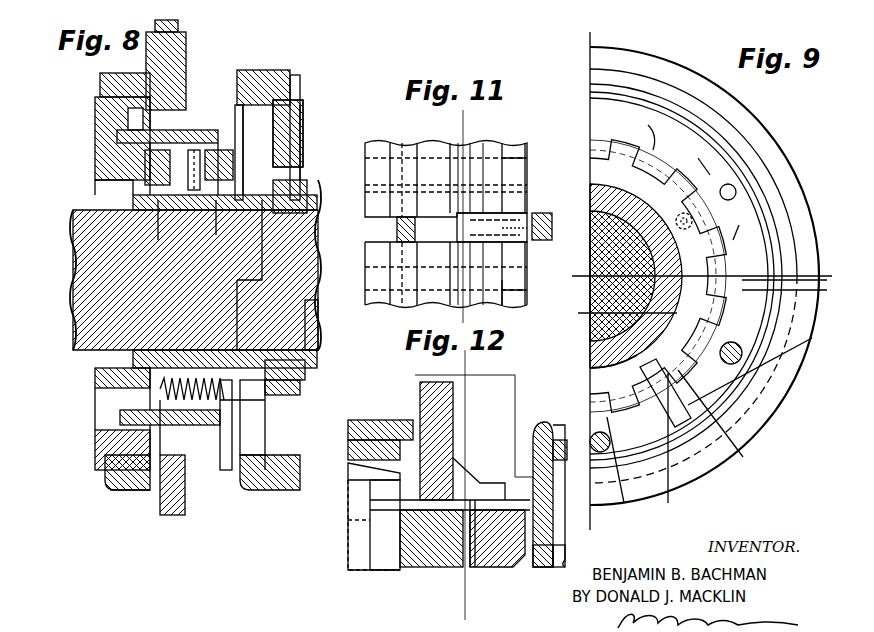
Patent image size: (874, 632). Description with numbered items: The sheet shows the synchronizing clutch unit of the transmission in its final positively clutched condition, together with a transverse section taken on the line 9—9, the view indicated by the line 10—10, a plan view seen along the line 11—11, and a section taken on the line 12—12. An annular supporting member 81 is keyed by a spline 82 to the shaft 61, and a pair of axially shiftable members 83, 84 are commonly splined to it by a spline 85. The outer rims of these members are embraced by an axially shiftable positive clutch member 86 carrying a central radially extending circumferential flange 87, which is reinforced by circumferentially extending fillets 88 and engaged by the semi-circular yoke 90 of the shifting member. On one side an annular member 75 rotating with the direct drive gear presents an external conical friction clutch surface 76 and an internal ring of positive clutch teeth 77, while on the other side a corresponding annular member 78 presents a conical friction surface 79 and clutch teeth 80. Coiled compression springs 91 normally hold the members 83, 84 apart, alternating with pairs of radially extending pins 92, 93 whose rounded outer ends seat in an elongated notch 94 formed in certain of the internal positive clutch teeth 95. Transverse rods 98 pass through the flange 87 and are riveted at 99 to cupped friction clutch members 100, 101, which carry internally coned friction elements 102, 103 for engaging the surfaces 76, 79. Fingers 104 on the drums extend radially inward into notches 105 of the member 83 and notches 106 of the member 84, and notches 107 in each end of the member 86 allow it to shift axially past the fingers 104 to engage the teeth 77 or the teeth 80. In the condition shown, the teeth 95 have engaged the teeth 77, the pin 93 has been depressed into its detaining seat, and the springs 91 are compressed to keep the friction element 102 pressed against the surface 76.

In FIG. 8, the section line 9— 9 is at (290, 75).
In FIG. 8, the section line 10— 10 is at (190, 538).
In FIG. 12, the section line 11— 11 is at (583, 487).
In FIG. 11, the section line 12— 12 is at (565, 200).
In FIG. 8, the shaft 61 is at (95, 268).
In FIG. 9, the shaft 61 is at (613, 276).
In FIG. 8, the annular member 75 is at (97, 130).
In FIG. 8, the external conical friction clutch surface 76 is at (110, 458).
In FIG. 8, the positive clutch teeth 77 is at (122, 418).
In FIG. 8, the annular member 78 is at (278, 142).
In FIG. 8, the external conical friction surface 79 is at (292, 86).
In FIG. 8, the positive clutch teeth 80 is at (300, 388).
In FIG. 8, the annular supporting member 81 is at (312, 300).
In FIG. 9, the annular supporting member 81 is at (598, 365).
In FIG. 9, the spline 82 is at (598, 215).
In FIG. 8, the axially shiftable member 83 is at (158, 229).
In FIG. 12, the axially shiftable member 83 is at (430, 568).
In FIG. 8, the axially shiftable member 84 is at (218, 228).
In FIG. 12, the axially shiftable member 84 is at (478, 567).
In FIG. 9, the axially shiftable member 84 is at (598, 395).
In FIG. 9, the spline 85 is at (623, 312).
In FIG. 8, the positive clutch member 86 is at (210, 148).
In FIG. 11, the positive clutch member 86 is at (505, 300).
In FIG. 12, the positive clutch member 86 is at (540, 460).
In FIG. 9, the positive clutch member 86 is at (603, 410).
In FIG. 8, the circumferential flange 87 is at (150, 60).
In FIG. 11, the circumferential flange 87 is at (440, 150).
In FIG. 12, the circumferential flange 87 is at (455, 400).
In FIG. 9, the circumferential flange 87 is at (612, 72).
In FIG. 11, the fillets 88 is at (472, 150).
In FIG. 12, the fillets 88 is at (478, 482).
In FIG. 8, the semi-circular yoke 90 is at (150, 56).
In FIG. 9, the semi-circular yoke 90 is at (666, 70).
In FIG. 8, the coiled compression springs 91 is at (312, 330).
In FIG. 9, the coiled compression springs 91 is at (618, 10).
In FIG. 8, the radially extending pin 92 is at (150, 170).
In FIG. 8, the radially extending pin 93 is at (312, 198).
In FIG. 9, the radially extending pin 93 is at (618, 150).
In FIG. 8, the elongated notch 94 is at (190, 148).
In FIG. 8, the internal positive clutch teeth 95 is at (160, 392).
In FIG. 12, the internal positive clutch teeth 95 is at (372, 540).
In FIG. 9, the internal positive clutch teeth 95 is at (698, 382).
In FIG. 8, the transverse rod 98 is at (232, 110).
In FIG. 9, the transverse rod 98 is at (721, 425).
In FIG. 8, the rivet 99 is at (167, 125).
In FIG. 9, the rivet 99 is at (736, 190).
In FIG. 8, the cupped friction clutch member 100 is at (118, 494).
In FIG. 12, the cupped friction clutch member 100 is at (380, 420).
In FIG. 8, the cupped friction clutch member 101 is at (292, 78).
In FIG. 12, the cupped friction clutch member 101 is at (558, 425).
In FIG. 9, the cupped friction clutch member 101 is at (705, 125).
In FIG. 8, the internally coned friction element 102 is at (108, 472).
In FIG. 12, the internally coned friction element 102 is at (360, 448).
In FIG. 8, the internally coned friction element 103 is at (270, 492).
In FIG. 12, the internally coned friction element 103 is at (576, 447).
In FIG. 9, the internally coned friction element 103 is at (718, 138).
In FIG. 8, the fingers 104 is at (130, 118).
In FIG. 11, the fingers 104 is at (392, 248).
In FIG. 12, the fingers 104 is at (375, 418).
In FIG. 9, the fingers 104 is at (736, 242).
In FIG. 8, the notches 105 is at (97, 380).
In FIG. 12, the notches 105 is at (370, 572).
In FIG. 8, the notches 106 is at (290, 180).
In FIG. 11, the notches 106 is at (537, 213).
In FIG. 12, the notches 106 is at (565, 552).
In FIG. 9, the notches 106 is at (638, 170).
In FIG. 11, the notches 107 is at (490, 215).
In FIG. 12, the notches 107 is at (500, 568).
In FIG. 9, the notches 107 is at (752, 285).